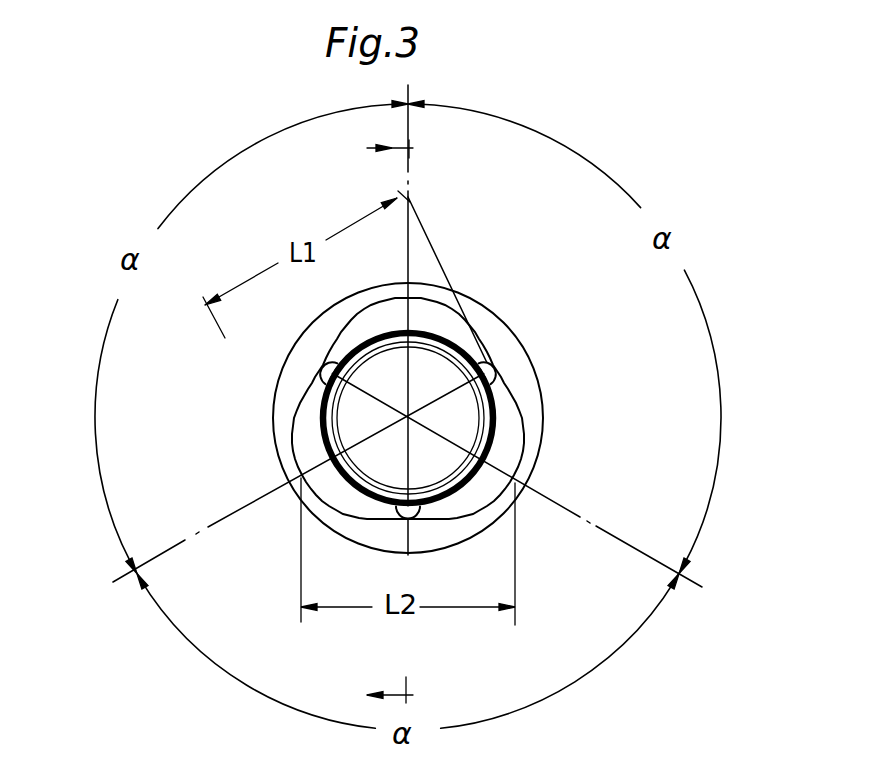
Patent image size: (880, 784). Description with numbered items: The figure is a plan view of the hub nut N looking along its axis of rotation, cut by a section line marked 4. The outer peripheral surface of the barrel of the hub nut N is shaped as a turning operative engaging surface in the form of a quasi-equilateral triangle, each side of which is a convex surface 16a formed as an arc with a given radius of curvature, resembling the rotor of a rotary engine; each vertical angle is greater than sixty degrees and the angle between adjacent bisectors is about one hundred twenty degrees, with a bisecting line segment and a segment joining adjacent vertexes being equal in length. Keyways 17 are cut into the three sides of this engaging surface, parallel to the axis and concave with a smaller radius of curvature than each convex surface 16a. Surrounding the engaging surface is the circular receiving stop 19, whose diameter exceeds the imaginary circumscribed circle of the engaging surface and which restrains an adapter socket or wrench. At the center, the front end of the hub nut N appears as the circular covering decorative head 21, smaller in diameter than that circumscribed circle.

The section line 4- 4 is at (389, 409).
The receiving stop 19 is at (480, 303).
The convex surface 16a is at (357, 323).
The keyways 17 is at (487, 363).
The covering decorative head 21 is at (343, 427).
The hub nut N is at (543, 470).